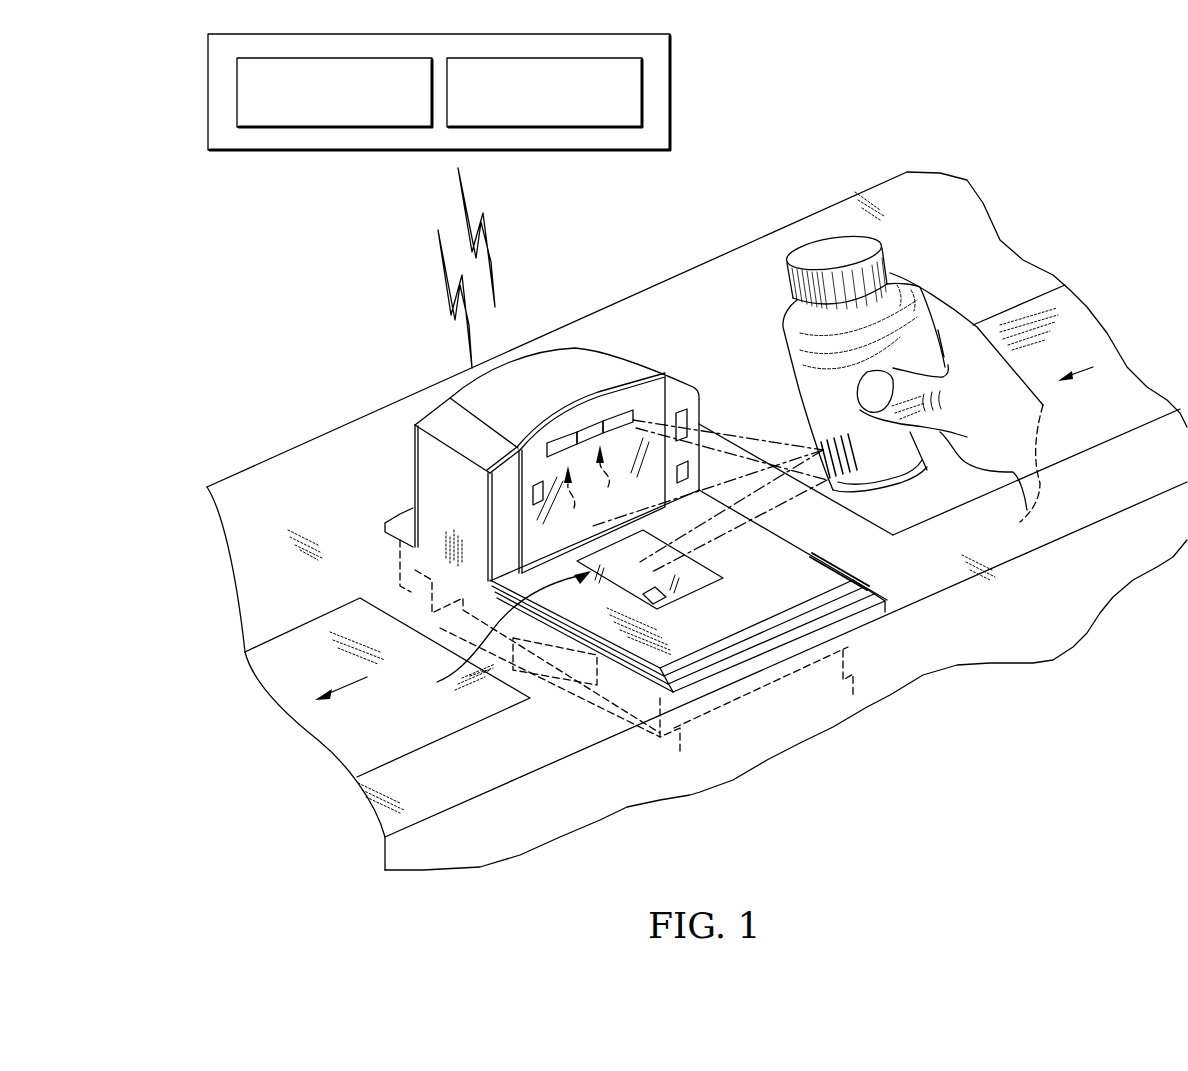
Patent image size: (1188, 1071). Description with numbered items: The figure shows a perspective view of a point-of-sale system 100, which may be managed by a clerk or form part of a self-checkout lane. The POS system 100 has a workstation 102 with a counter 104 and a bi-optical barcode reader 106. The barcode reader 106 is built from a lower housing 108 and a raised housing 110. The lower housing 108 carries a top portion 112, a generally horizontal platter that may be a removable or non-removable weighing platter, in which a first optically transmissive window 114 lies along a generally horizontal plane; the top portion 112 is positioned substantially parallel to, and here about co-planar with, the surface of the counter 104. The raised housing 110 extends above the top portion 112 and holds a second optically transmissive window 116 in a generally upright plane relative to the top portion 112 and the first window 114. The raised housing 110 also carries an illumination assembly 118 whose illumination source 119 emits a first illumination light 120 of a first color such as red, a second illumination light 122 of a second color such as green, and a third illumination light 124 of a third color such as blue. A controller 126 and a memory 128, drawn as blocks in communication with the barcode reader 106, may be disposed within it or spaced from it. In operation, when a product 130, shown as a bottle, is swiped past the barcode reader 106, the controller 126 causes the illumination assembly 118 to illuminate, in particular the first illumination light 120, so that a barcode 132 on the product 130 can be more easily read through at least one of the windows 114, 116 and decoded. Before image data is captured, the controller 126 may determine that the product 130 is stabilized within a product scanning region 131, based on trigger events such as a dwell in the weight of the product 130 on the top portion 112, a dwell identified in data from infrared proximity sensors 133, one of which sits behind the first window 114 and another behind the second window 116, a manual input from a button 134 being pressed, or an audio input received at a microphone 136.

The point-of-sale system 100 is at (1034, 111).
The workstation 102 is at (793, 212).
The counter 104 is at (985, 246).
The bi-optical barcode reader 106 is at (418, 462).
The lower housing 108 is at (634, 741).
The raised housing 110 is at (555, 494).
The top portion 112 is at (847, 585).
The first optically transmissive window 114 is at (720, 585).
The second optically transmissive window 116 is at (528, 536).
The illumination assembly 118 is at (574, 502).
The illumination source 119 is at (610, 479).
The first illumination light 120 is at (548, 440).
The second illumination light 122 is at (583, 423).
The third illumination light 124 is at (622, 413).
The controller 126 is at (237, 90).
The memory 128 is at (642, 90).
The product 130 is at (839, 394).
The product scanning region 131 is at (495, 636).
The barcode 132 is at (833, 482).
The infrared proximity sensors 133 is at (533, 493).
The button 134 is at (692, 470).
The microphone 136 is at (688, 424).